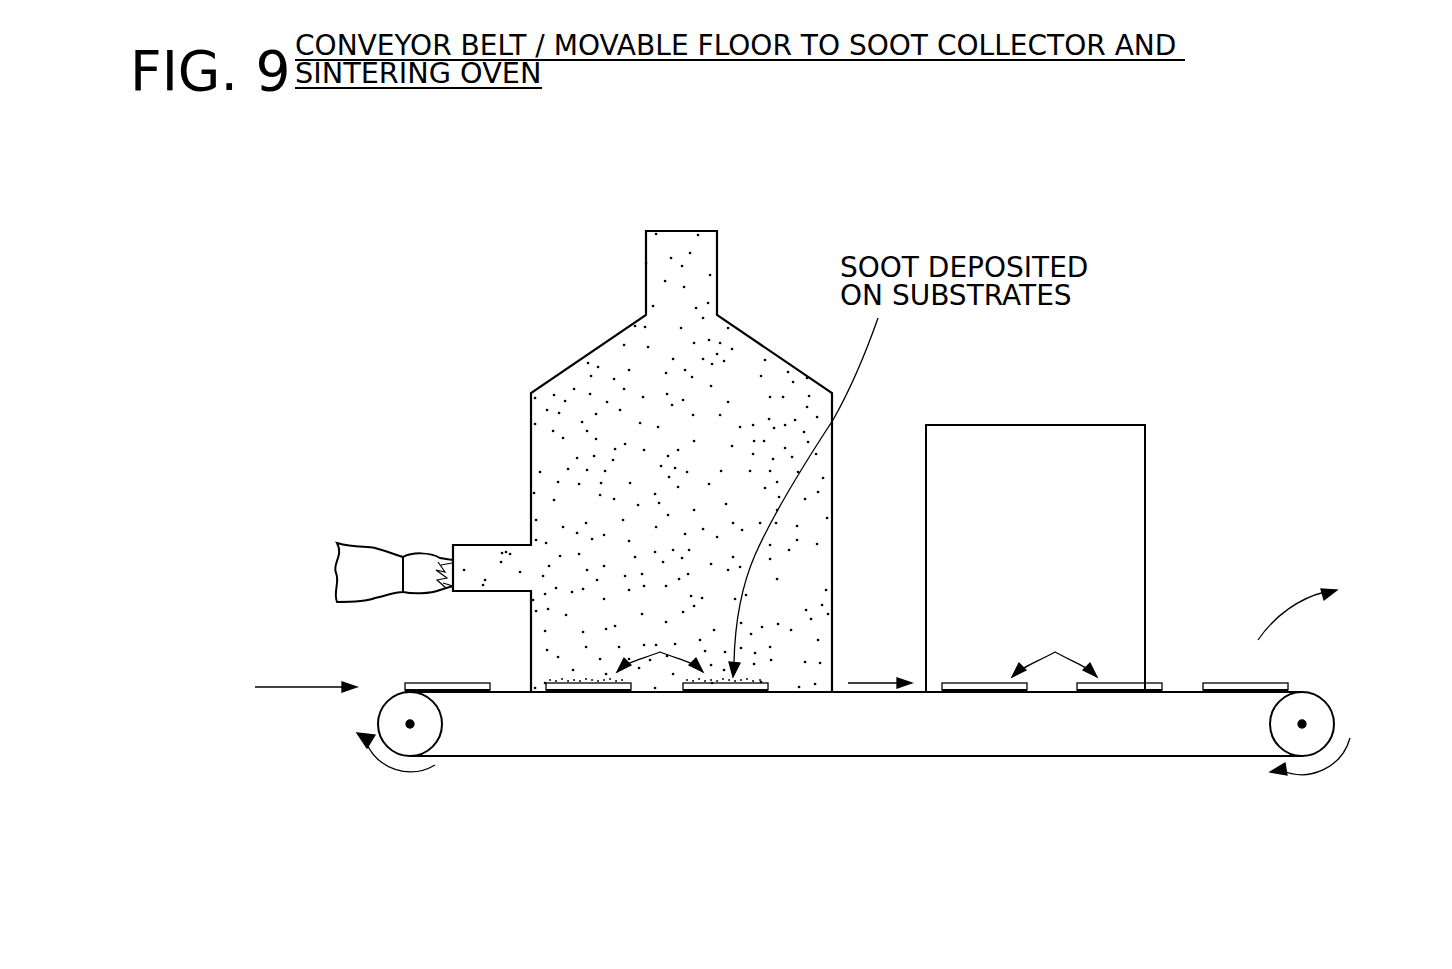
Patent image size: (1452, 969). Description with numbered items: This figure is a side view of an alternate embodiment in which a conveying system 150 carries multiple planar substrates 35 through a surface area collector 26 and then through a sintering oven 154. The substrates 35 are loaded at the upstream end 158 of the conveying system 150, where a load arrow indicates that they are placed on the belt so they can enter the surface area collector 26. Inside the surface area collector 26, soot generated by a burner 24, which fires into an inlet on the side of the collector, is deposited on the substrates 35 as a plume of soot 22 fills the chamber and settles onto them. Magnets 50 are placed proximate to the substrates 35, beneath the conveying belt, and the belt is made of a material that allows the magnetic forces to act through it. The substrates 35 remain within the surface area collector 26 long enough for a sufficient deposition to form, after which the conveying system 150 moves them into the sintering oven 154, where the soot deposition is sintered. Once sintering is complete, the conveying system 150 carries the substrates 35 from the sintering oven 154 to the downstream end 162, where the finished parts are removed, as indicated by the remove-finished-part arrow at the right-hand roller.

The soot 22 is at (728, 382).
The burner 24 is at (363, 558).
The surface area collector 26 is at (590, 338).
The substrates 35 is at (472, 680).
The magnets 50 is at (967, 693).
The conveying system 150 is at (547, 757).
The sintering oven 154 is at (1123, 460).
The upstream end 158 is at (411, 668).
The downstream end 162 is at (1309, 679).